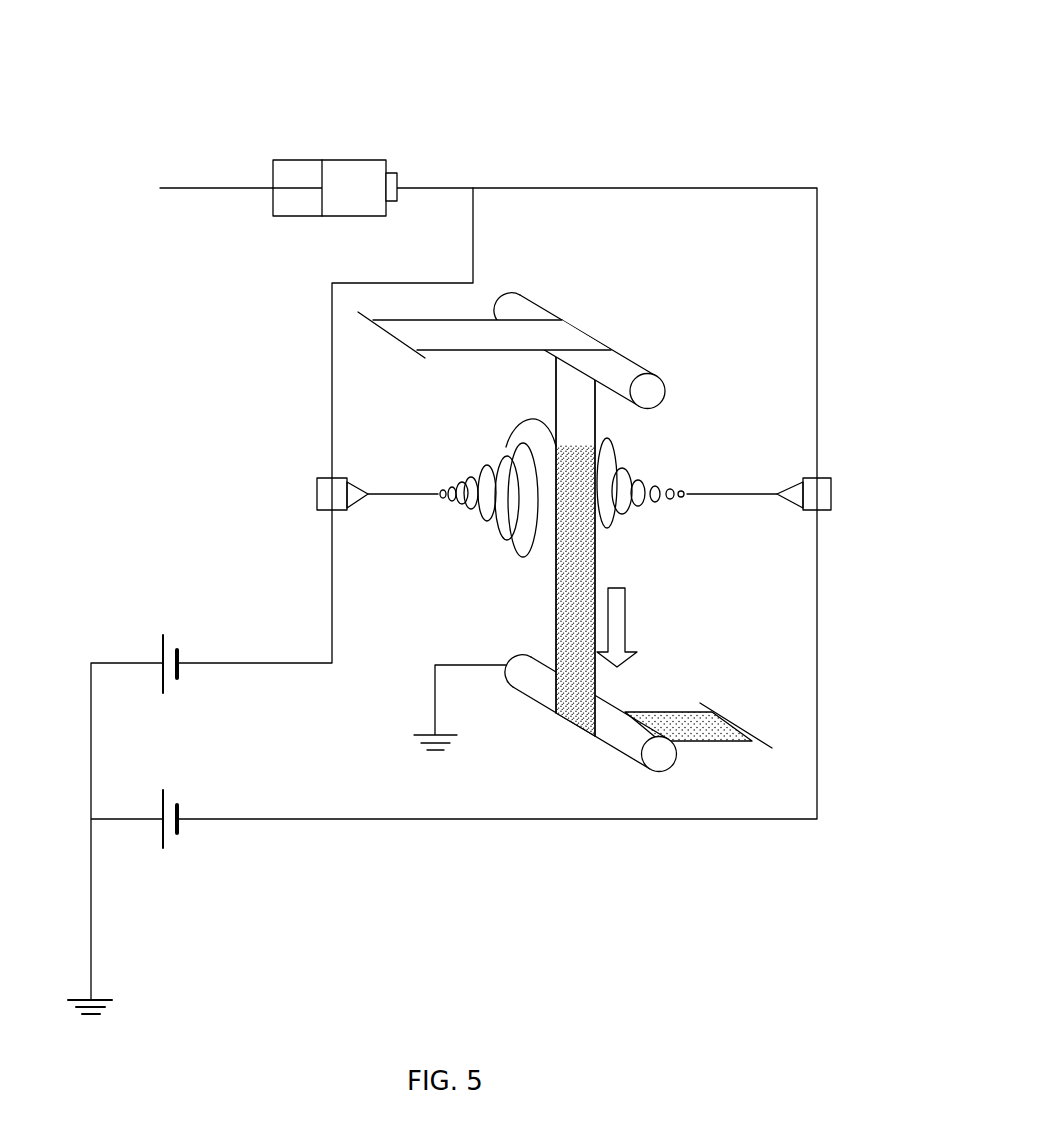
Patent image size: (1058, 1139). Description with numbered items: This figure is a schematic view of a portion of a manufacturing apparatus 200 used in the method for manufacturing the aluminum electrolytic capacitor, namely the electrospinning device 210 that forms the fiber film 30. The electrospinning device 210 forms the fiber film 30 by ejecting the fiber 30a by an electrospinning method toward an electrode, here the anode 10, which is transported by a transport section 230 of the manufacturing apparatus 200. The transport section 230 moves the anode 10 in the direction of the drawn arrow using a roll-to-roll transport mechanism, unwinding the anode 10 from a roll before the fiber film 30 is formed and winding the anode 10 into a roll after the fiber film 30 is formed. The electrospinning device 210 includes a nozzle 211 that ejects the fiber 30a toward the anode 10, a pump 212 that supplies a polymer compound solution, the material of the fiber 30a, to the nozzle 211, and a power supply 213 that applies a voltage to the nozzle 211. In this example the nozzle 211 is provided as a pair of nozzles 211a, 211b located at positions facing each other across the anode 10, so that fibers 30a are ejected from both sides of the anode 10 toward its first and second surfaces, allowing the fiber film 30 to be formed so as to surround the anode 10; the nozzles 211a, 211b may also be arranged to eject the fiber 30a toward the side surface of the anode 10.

The manufacturing apparatus 200 is at (626, 91).
The electrospinning device 210 is at (712, 172).
The nozzle 211 is at (298, 463).
The nozzle 211a is at (317, 489).
The nozzle 211b is at (831, 490).
The pump 212 is at (350, 178).
The power supply 213 is at (205, 847).
The transport section 230 is at (676, 361).
The anode 10 is at (411, 334).
The fiber film 30 is at (568, 610).
The fiber 30a is at (410, 495).